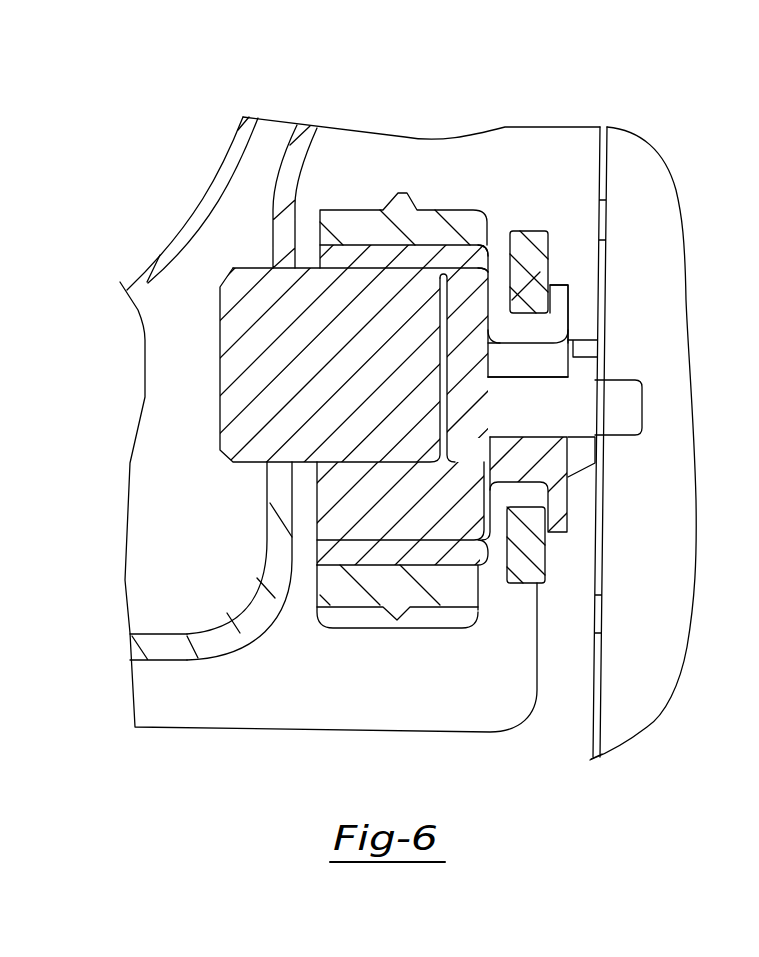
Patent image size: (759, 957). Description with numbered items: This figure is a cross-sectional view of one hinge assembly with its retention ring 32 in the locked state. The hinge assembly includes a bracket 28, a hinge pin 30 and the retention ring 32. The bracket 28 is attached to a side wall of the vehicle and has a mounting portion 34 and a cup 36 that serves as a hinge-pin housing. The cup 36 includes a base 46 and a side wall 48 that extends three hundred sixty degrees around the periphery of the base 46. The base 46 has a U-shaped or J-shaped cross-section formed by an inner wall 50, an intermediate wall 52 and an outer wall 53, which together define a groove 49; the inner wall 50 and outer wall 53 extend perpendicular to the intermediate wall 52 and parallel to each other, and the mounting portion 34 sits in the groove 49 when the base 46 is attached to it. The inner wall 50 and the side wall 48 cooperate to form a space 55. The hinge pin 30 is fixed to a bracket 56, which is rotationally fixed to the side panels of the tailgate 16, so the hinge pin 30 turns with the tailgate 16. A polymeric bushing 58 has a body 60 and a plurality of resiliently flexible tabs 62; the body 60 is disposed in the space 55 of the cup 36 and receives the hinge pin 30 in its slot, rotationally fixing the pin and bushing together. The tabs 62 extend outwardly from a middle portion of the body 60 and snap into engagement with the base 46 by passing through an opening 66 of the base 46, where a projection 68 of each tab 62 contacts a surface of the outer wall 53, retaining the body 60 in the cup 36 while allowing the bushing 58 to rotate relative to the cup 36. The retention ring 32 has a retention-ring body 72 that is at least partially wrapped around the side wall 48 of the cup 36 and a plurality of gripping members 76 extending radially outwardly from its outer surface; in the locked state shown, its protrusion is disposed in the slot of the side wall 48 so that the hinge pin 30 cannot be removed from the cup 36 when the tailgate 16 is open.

The tailgate 16 is at (170, 662).
The bracket 28 is at (550, 566).
The hinge pin 30 is at (225, 338).
The retention ring 32 is at (351, 208).
The mounting portion 34 is at (525, 230).
The cup 36 is at (494, 245).
The base 46 is at (565, 275).
The side wall 48 is at (332, 257).
The groove 49 is at (534, 298).
The inner wall 50 is at (487, 258).
The intermediate wall 52 is at (536, 345).
The outer wall 53 is at (565, 302).
The space 55 is at (450, 277).
The bracket 56 is at (213, 640).
The bushing 58 is at (318, 499).
The body 60 is at (333, 525).
The resiliently flexible tabs 62 is at (633, 437).
The opening 66 is at (511, 480).
The projection 68 is at (603, 332).
The retention-ring body 72 is at (460, 587).
The gripping members 76 is at (417, 630).